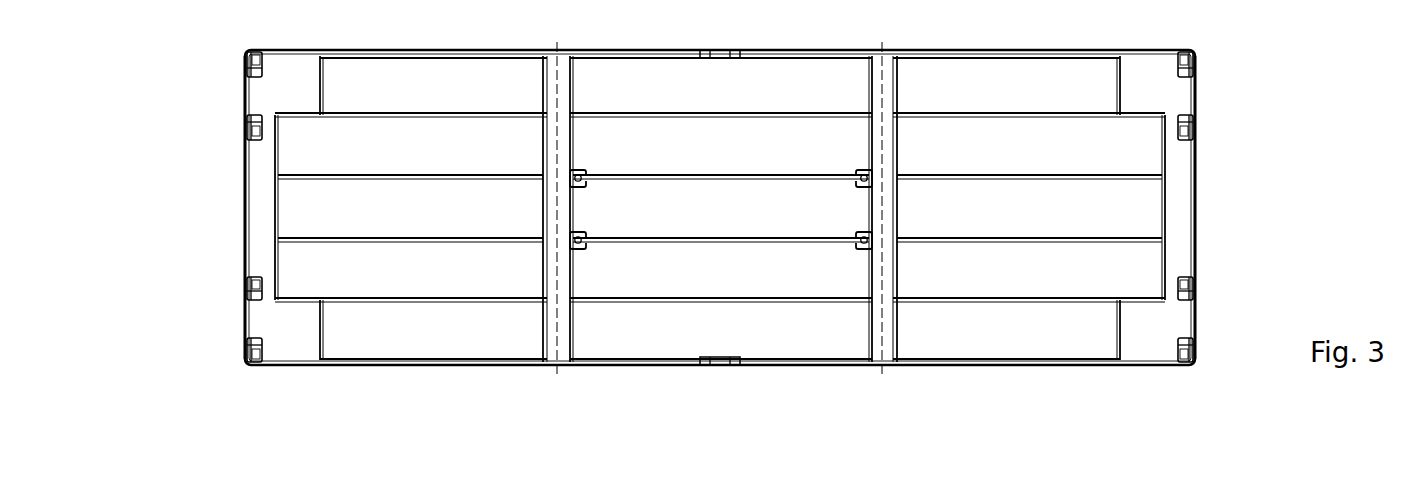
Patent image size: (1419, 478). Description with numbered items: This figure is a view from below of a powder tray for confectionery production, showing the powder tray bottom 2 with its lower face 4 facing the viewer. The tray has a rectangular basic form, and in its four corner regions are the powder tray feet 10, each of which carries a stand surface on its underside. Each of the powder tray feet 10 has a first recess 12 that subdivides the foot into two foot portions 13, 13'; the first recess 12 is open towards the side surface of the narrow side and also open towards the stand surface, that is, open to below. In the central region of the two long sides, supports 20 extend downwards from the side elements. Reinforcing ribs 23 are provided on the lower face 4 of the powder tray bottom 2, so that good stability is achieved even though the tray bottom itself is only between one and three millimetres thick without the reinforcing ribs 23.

The powder tray bottom 2 is at (967, 267).
The lower face 4 is at (1029, 209).
The powder tray feet 10 is at (247, 358).
The first recess 12 is at (255, 95).
The foot portion 13 is at (182, 43).
The foot portion 13' is at (177, 153).
The supports 20 is at (730, 50).
The reinforcing ribs 23 is at (413, 305).